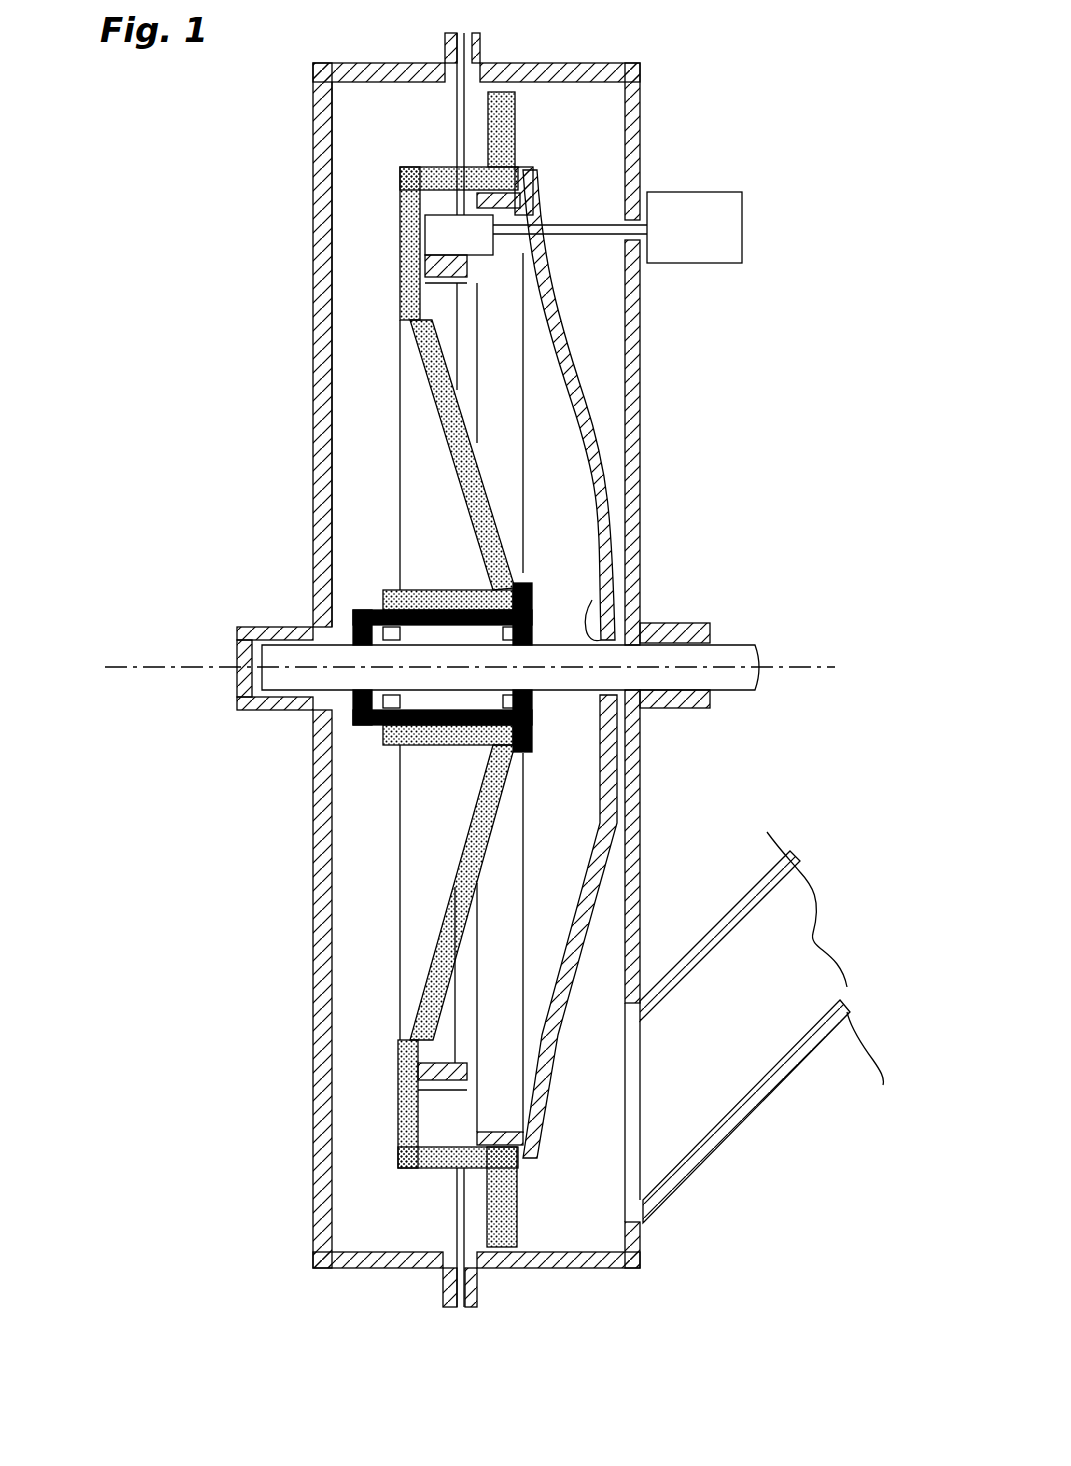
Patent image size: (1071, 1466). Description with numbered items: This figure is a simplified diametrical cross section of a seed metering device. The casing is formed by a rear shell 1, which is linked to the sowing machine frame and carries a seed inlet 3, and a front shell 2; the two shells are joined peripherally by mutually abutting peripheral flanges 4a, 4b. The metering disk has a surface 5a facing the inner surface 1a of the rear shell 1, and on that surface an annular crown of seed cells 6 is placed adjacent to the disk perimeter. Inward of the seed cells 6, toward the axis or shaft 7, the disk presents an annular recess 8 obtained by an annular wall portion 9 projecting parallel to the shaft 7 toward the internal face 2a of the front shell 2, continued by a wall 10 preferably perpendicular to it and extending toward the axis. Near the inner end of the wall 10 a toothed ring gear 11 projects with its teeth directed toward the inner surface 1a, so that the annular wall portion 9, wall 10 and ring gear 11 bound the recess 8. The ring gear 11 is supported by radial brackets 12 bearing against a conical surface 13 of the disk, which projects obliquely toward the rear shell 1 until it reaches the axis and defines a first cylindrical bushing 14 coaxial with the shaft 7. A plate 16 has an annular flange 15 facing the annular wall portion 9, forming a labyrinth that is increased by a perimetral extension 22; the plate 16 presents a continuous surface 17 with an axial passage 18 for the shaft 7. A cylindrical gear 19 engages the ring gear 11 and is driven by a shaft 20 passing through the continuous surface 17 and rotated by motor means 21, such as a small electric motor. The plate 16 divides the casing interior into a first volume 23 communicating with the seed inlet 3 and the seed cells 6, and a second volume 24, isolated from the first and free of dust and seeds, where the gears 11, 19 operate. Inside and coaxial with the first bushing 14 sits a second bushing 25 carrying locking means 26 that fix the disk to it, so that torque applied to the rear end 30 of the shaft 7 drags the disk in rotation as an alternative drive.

The rear shell 1 is at (643, 372).
The inner surface of the rear shell 1a is at (624, 154).
The front shell 2 is at (312, 440).
The internal face of the front shell 2a is at (334, 524).
The seed inlet 3 is at (787, 988).
The peripheral flange 4a is at (472, 1272).
The peripheral flange 4b is at (447, 1292).
The surface of the metering plate 5a is at (497, 479).
The seed cells 6 is at (510, 118).
The shaft 7 is at (280, 680).
The annular recess 8 is at (449, 1111).
The annular wall portion 9 is at (420, 1172).
The wall 10 is at (398, 200).
The toothed ring gear 11 is at (443, 1045).
The radial brackets 12 is at (440, 302).
The conical surface 13 is at (455, 890).
The first cylindrical bushing 14 is at (445, 588).
The annular flange 15 is at (505, 1124).
The plate 16 is at (580, 978).
The continuous surface 17 is at (560, 334).
The axial passage 18 is at (600, 612).
The cylindrical gear 19 is at (440, 222).
The shaft 20 is at (603, 222).
The motor means 21 is at (725, 230).
The perimetral extension 22 is at (530, 167).
The first volume 23 is at (583, 1048).
The second volume 24 is at (508, 432).
The second bushing 25 is at (372, 738).
The locking means 26 is at (352, 630).
The rear end of the shaft 30 is at (757, 676).